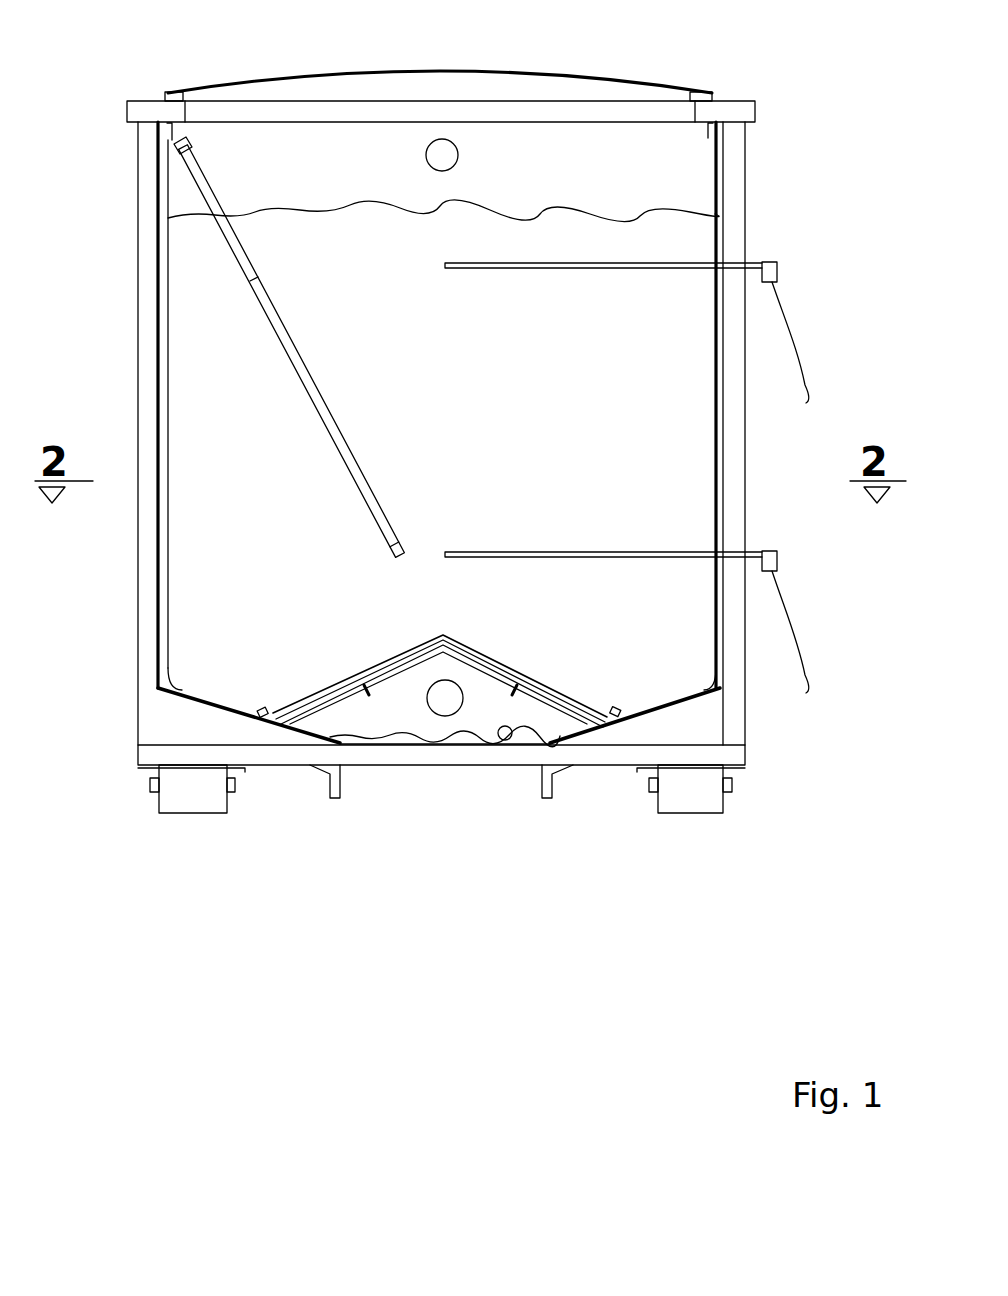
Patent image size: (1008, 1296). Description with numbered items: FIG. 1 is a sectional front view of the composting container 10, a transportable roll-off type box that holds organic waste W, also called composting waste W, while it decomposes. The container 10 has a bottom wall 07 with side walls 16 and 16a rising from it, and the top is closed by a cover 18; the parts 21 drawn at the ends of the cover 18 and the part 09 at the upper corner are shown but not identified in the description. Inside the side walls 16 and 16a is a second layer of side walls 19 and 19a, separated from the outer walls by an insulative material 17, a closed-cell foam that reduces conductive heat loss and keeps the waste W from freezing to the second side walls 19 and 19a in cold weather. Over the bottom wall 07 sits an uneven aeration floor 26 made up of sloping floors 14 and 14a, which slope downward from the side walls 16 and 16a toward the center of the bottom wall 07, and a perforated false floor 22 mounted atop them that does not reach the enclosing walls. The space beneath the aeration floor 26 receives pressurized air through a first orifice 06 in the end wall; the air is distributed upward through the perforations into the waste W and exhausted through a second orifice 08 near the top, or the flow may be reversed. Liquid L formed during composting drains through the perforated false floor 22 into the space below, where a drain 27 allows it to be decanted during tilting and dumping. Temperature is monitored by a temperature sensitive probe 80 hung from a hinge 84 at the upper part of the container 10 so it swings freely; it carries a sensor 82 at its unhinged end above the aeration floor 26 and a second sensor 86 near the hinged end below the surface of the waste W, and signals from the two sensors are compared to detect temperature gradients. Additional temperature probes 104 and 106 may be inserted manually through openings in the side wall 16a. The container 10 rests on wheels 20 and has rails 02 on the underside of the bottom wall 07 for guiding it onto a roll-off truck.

The container 10 is at (760, 99).
The cover 18 is at (497, 77).
The hinge blocks 21 is at (165, 98).
The side wall 16 is at (158, 520).
The side wall 16a is at (722, 390).
The insulative material 17 is at (163, 265).
The second side wall 19 is at (163, 420).
The second side wall 19a is at (715, 323).
The corner bracket 09 is at (212, 125).
The sloping floor 14 is at (207, 702).
The sloping floor 14a is at (688, 698).
The aeration floor 26 is at (441, 634).
The perforated false floor 22 is at (478, 652).
The bottom wall 07 is at (422, 742).
The organic waste W is at (372, 213).
The liquid L is at (380, 740).
The second orifice 08 is at (444, 157).
The first orifice 06 is at (438, 705).
The drain 27 is at (505, 740).
The temperature probe 104 is at (746, 262).
The temperature probe 106 is at (746, 551).
The second sensor 86 is at (258, 276).
The hinge 84 is at (178, 147).
The temperature sensitive probe 80 is at (358, 484).
The sensor 82 is at (397, 560).
The wheels 20 is at (167, 813).
The rails 02 is at (322, 797).